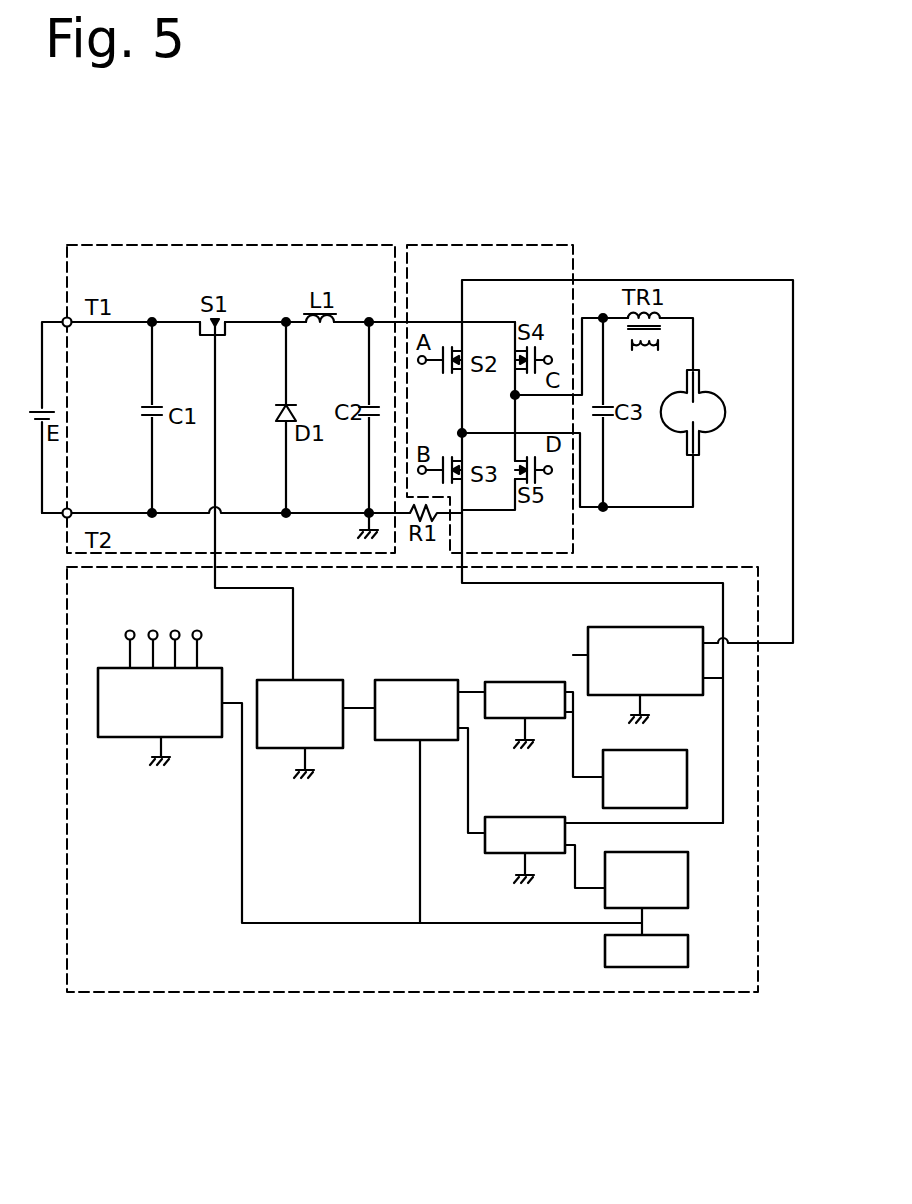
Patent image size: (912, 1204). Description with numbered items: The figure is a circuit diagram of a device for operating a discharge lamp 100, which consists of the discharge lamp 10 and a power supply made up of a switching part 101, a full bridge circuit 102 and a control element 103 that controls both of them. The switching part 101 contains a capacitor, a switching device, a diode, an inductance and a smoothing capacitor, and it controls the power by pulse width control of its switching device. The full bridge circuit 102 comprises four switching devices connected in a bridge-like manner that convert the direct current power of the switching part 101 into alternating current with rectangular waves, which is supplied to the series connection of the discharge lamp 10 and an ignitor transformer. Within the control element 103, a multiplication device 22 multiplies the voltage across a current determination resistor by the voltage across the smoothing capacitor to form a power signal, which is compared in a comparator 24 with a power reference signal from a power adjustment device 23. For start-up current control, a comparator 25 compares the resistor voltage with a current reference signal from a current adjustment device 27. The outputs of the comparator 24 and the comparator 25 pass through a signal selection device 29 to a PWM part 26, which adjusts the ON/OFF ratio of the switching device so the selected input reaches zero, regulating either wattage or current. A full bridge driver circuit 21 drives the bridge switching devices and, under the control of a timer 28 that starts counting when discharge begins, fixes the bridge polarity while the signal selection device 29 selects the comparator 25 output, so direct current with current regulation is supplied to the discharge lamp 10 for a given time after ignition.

The device for operating a discharge lamp 100 is at (464, 180).
The switching part 101 is at (192, 245).
The full bridge circuit 102 is at (523, 245).
The control element 103 is at (258, 992).
The discharge lamp 10 is at (700, 440).
The full bridge driver circuit 21 is at (128, 737).
The multiplication device 22 is at (610, 627).
The power adjustment device 23 is at (665, 750).
The comparator 24 is at (540, 682).
The comparator 25 is at (540, 817).
The PWM part 26 is at (314, 680).
The current adjustment device 27 is at (690, 861).
The timer 28 is at (690, 952).
The signal selection device 29 is at (436, 680).